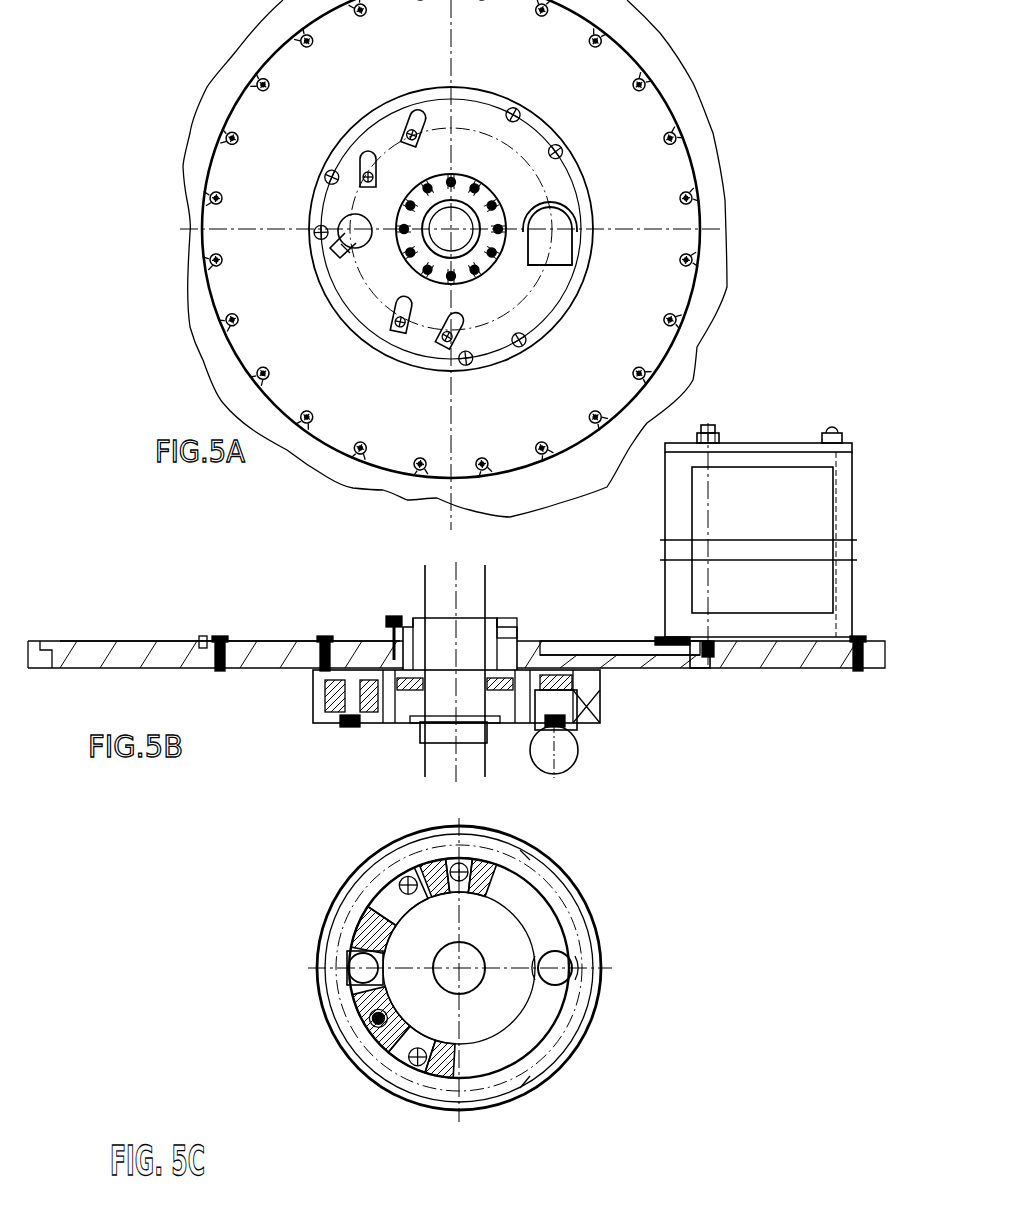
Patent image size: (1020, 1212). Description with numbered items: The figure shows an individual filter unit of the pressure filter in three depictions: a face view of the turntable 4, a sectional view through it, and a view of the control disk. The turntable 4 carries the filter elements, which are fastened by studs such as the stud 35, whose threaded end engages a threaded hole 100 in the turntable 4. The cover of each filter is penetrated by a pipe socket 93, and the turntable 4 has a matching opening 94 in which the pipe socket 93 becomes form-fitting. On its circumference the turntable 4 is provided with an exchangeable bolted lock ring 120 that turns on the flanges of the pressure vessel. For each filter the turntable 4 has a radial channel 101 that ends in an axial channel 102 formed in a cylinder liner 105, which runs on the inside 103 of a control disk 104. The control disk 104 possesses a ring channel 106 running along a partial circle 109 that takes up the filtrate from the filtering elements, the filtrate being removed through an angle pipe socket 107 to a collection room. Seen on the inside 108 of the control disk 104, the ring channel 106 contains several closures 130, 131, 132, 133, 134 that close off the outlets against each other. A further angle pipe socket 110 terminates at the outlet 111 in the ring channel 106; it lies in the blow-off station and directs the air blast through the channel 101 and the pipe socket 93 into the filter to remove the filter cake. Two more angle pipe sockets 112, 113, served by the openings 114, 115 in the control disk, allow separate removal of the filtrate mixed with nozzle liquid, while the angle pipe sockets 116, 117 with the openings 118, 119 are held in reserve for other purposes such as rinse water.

In FIG. 5B, the turntable 4 is at (780, 668).
In FIG. 5B, the stud 35 is at (715, 425).
In FIG. 5B, the pipe socket 93 is at (703, 648).
In FIG. 5B, the opening 94 is at (667, 636).
In FIG. 5B, the threaded hole 100 is at (718, 660).
In FIG. 5B, the radial channel 101 is at (640, 658).
In FIG. 5B, the axial channel 102 is at (598, 730).
In FIG. 5B, the inside of control disk 103 is at (272, 671).
In FIG. 5B, the control disk 104 is at (383, 723).
In FIG. 5C, the control disk 104 is at (560, 1073).
In FIG. 5C, the cylinder liner 105 is at (570, 947).
In FIG. 5C, the ring channel 106 is at (545, 1033).
In FIG. 5A, the angle pipe socket 107 is at (560, 243).
In FIG. 5B, the angle pipe socket 107 is at (560, 760).
In FIG. 5B, the inside of control disk 108 is at (322, 690).
In FIG. 5C, the partial circle 109 is at (538, 910).
In FIG. 5A, the angle pipe socket 110 is at (340, 242).
In FIG. 5C, the outlet 111 is at (345, 985).
In FIG. 5A, the angle pipe socket 112 is at (390, 320).
In FIG. 5A, the angle pipe socket 113 is at (440, 345).
In FIG. 5C, the opening 114 is at (363, 1037).
In FIG. 5C, the opening 115 is at (413, 1070).
In FIG. 5A, the angle pipe socket 116 is at (362, 162).
In FIG. 5A, the angle pipe socket 117 is at (413, 117).
In FIG. 5C, the opening 118 is at (408, 876).
In FIG. 5C, the opening 119 is at (470, 863).
In FIG. 5B, the bolted lock ring 120 is at (870, 668).
In FIG. 5C, the closure 130 is at (453, 1080).
In FIG. 5C, the closure 131 is at (378, 1050).
In FIG. 5C, the closure 132 is at (390, 990).
In FIG. 5C, the closure 133 is at (362, 910).
In FIG. 5C, the closure 134 is at (530, 867).